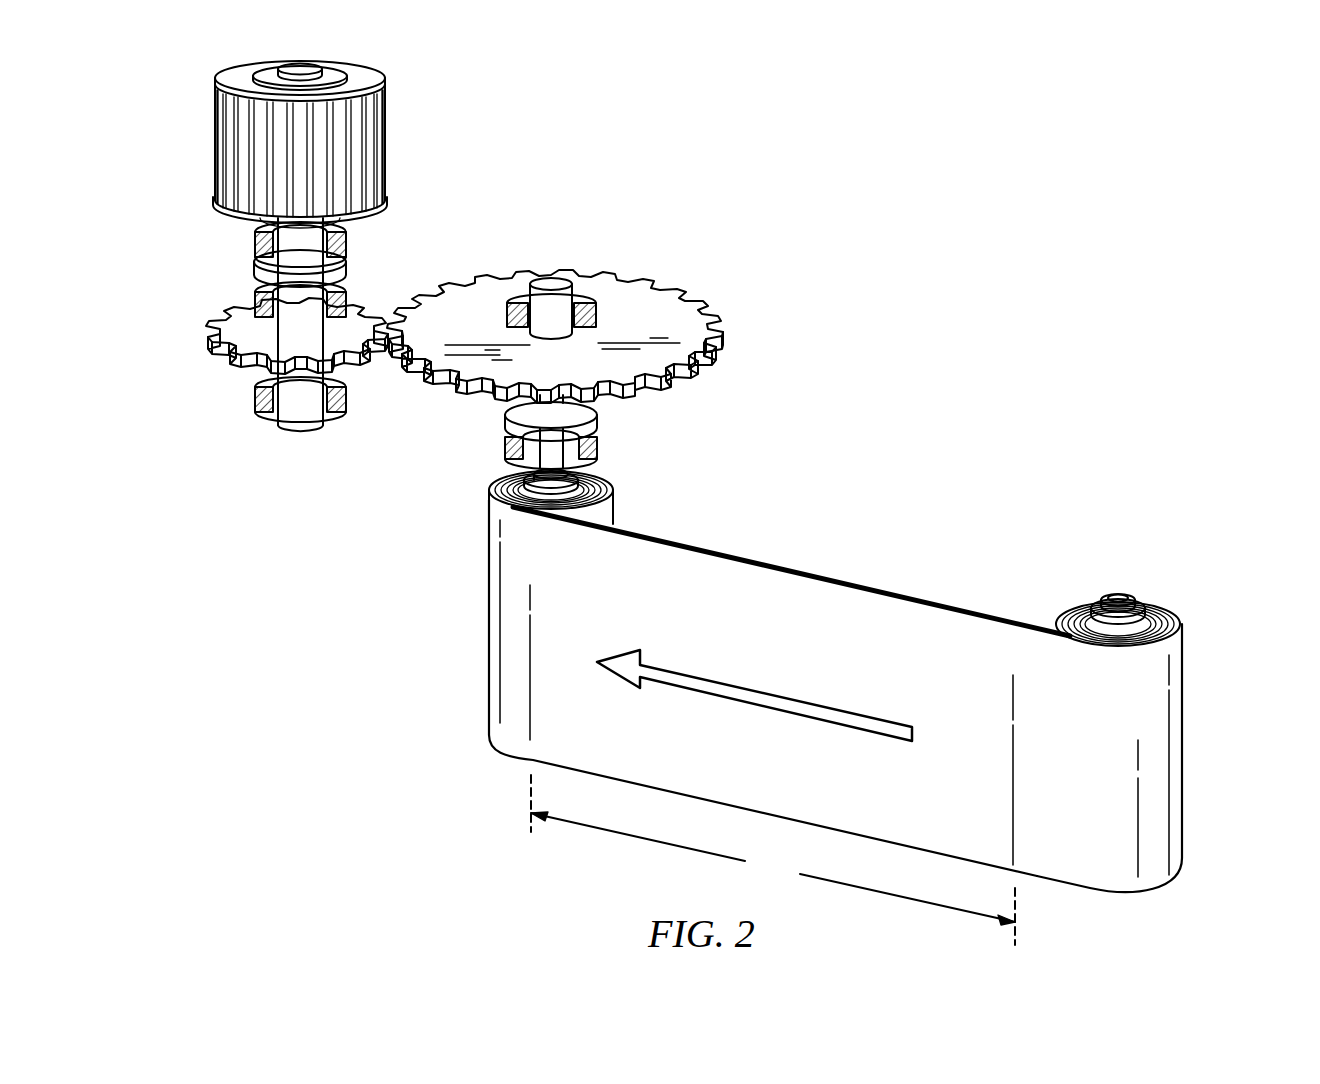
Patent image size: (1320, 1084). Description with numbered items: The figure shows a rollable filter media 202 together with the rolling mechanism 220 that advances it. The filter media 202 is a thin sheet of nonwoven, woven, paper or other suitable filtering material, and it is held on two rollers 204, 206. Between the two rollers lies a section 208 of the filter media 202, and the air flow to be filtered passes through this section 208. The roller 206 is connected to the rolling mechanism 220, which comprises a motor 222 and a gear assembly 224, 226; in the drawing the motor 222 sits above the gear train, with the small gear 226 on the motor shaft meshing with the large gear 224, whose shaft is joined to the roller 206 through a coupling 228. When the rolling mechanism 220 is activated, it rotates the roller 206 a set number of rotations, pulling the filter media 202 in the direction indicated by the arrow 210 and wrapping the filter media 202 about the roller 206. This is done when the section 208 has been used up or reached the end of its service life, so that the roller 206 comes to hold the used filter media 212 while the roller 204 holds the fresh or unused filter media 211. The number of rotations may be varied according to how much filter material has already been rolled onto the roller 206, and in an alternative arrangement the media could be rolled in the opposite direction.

The rollable filter media 202 is at (960, 604).
The roller 204 is at (1125, 594).
The roller 206 is at (603, 468).
The section 208 is at (773, 860).
The arrow 210 is at (746, 557).
The fresh or unused filter media 211 is at (1178, 661).
The used filter media 212 is at (494, 678).
The rolling mechanism 220 is at (428, 116).
The motor 222 is at (373, 145).
The gear assembly 224 is at (688, 300).
The gear assembly 226 is at (240, 362).
The coupling 228 is at (603, 418).